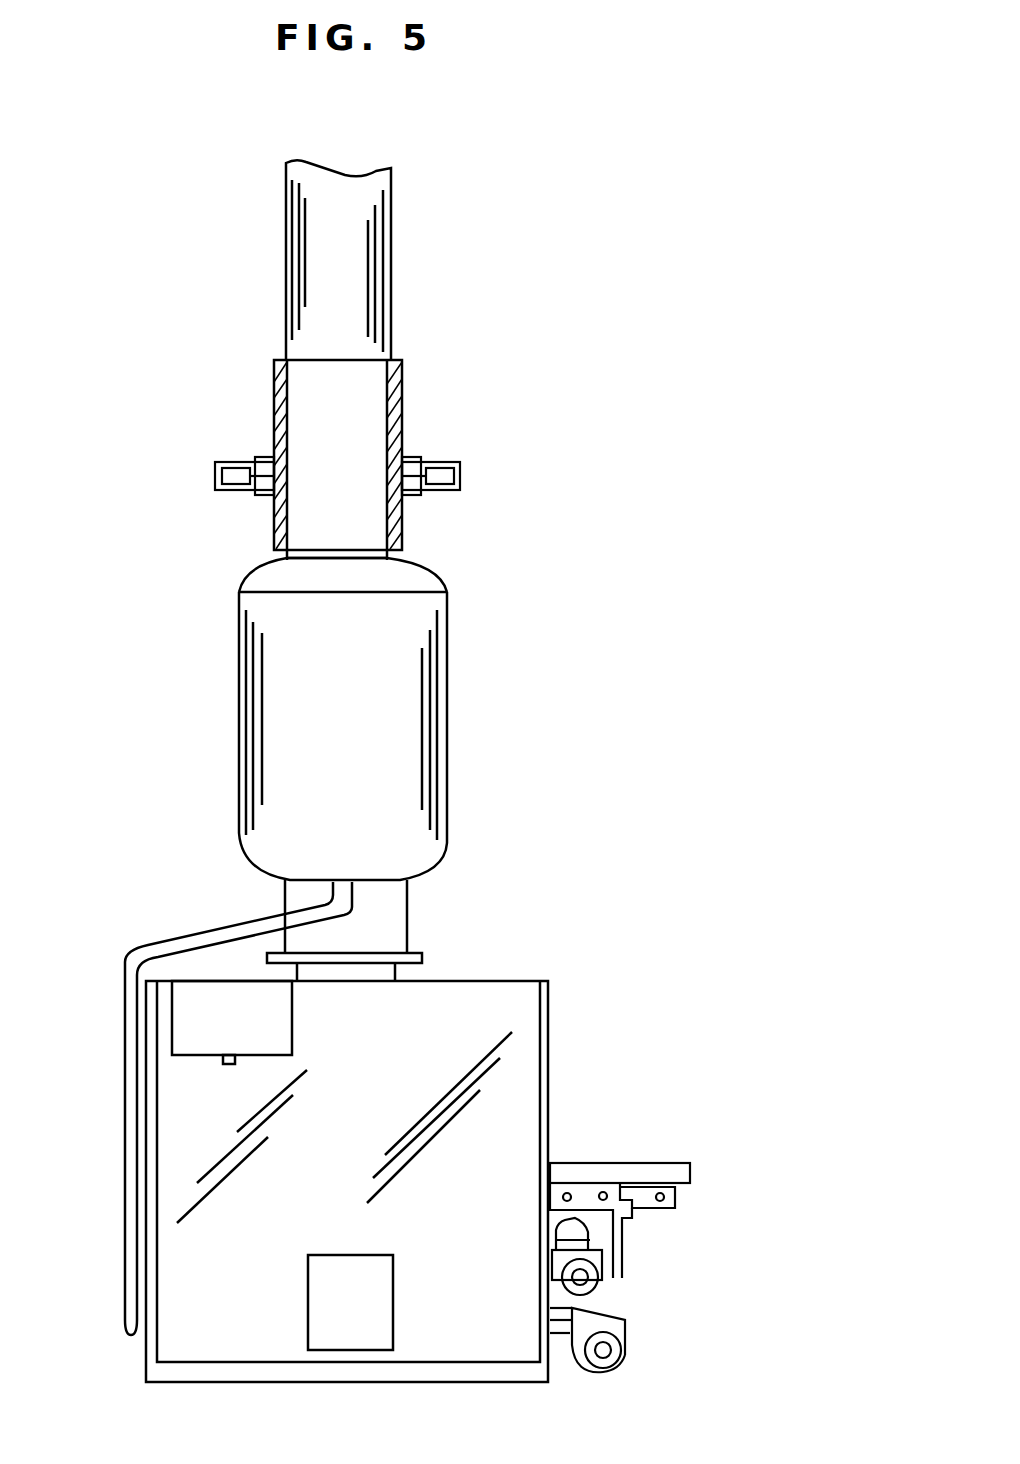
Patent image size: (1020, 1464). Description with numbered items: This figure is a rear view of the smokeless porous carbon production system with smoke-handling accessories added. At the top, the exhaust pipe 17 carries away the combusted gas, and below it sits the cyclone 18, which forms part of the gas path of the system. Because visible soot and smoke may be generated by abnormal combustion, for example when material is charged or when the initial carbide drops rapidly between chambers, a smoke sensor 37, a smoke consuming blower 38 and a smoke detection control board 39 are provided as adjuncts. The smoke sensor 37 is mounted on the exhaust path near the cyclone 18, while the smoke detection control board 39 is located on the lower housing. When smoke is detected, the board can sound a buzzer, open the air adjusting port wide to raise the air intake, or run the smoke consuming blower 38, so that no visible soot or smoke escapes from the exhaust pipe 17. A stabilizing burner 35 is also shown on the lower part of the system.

The exhaust pipe 17 is at (365, 193).
The cyclone 18 is at (415, 608).
The stabilizing burner 35 is at (600, 1290).
The smoke sensor 37 is at (213, 472).
The smoke consuming blower 38 is at (625, 1365).
The smoke detection control board 39 is at (185, 1022).